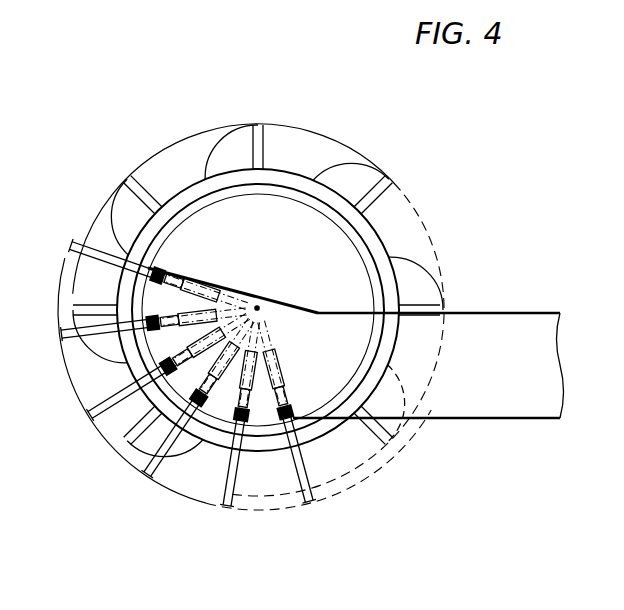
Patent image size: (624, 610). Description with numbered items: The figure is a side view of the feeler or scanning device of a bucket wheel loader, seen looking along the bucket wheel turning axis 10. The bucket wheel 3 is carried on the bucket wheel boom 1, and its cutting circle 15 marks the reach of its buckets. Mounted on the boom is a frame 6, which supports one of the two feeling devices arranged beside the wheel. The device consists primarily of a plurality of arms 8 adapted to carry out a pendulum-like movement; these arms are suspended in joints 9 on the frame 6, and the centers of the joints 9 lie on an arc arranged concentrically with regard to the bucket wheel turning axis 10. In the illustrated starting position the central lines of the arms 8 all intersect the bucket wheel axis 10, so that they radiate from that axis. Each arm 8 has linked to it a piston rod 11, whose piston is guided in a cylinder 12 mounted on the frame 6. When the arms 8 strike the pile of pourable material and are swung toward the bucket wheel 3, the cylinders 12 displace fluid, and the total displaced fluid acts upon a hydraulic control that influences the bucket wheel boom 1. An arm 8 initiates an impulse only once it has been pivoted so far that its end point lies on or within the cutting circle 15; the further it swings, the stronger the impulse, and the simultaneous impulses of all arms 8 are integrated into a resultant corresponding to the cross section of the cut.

The bucket wheel boom 1 is at (504, 332).
The bucket wheel 3 is at (383, 250).
The frame 6 is at (262, 300).
The arms 8 is at (84, 408).
The joints 9 is at (168, 272).
The bucket wheel turning axis 10 is at (266, 311).
The piston rod 11 is at (284, 388).
The cylinders 12 is at (283, 358).
The cutting circle 15 is at (352, 153).